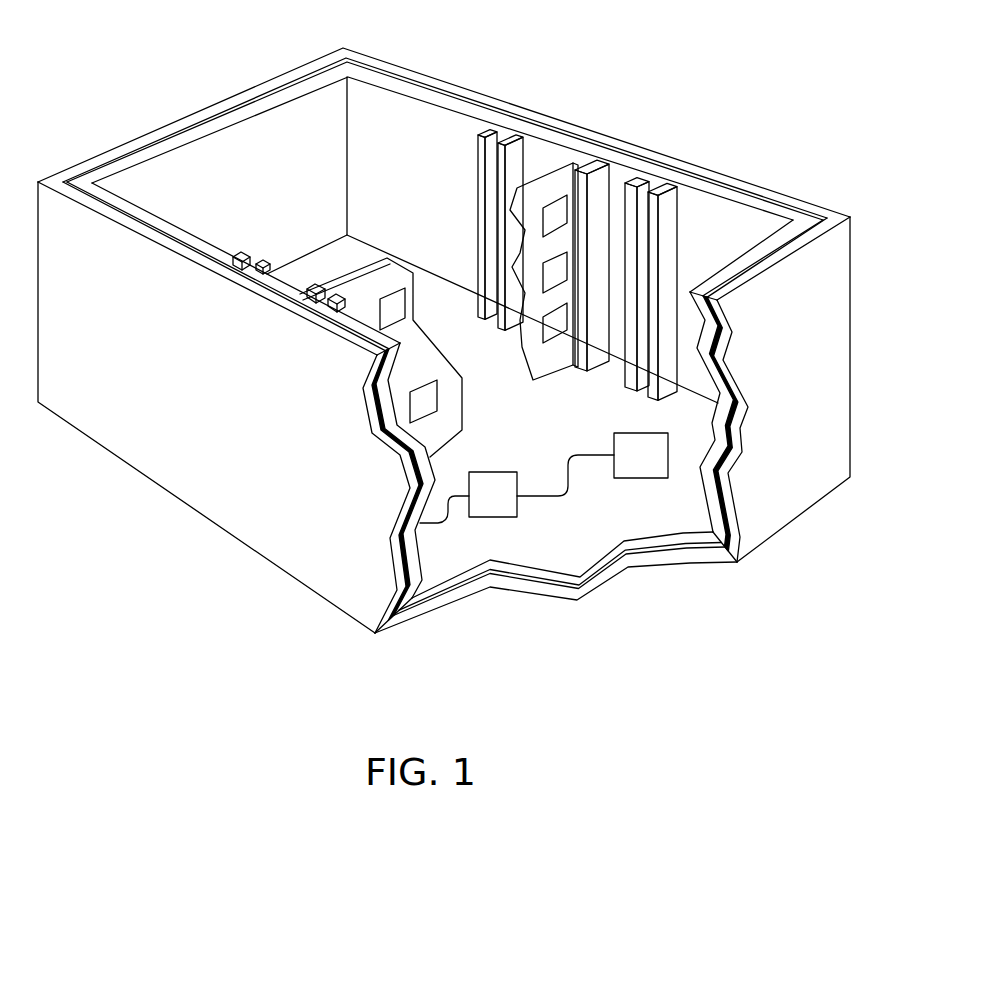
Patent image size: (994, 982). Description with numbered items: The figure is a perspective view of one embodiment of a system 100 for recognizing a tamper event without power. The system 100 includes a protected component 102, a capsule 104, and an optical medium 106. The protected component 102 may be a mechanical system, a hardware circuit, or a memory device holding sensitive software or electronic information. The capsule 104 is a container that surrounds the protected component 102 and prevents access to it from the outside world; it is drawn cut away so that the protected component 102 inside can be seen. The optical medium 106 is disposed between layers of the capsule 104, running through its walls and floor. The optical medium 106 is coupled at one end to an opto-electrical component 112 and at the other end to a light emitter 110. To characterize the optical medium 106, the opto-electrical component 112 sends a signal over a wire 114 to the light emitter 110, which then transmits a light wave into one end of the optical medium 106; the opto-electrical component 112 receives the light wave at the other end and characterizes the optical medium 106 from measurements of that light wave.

The system 100 is at (672, 68).
The protected component 102 is at (546, 190).
The capsule 104 is at (173, 453).
The optical medium 106 is at (265, 93).
The light emitter 110 is at (642, 467).
The opto-electrical component 112 is at (492, 500).
The wire 114 is at (571, 453).